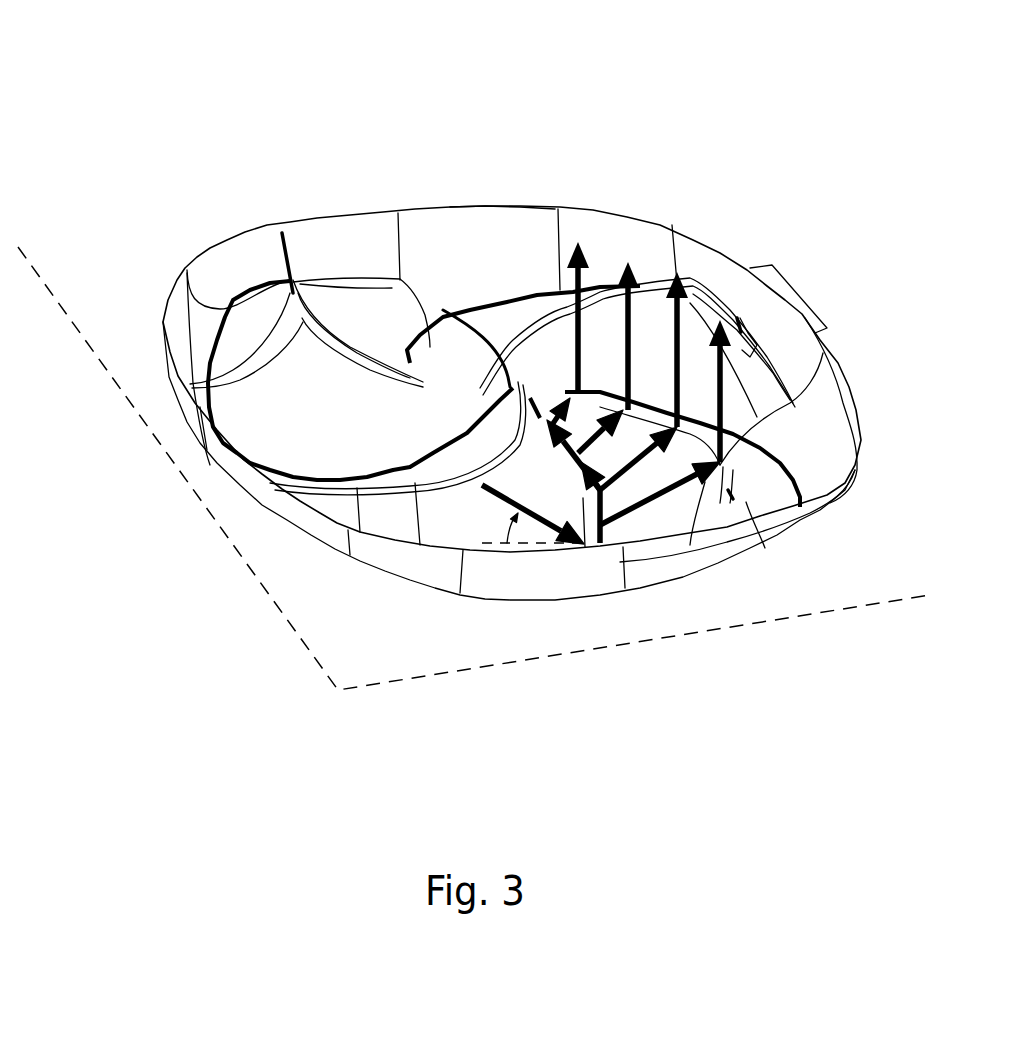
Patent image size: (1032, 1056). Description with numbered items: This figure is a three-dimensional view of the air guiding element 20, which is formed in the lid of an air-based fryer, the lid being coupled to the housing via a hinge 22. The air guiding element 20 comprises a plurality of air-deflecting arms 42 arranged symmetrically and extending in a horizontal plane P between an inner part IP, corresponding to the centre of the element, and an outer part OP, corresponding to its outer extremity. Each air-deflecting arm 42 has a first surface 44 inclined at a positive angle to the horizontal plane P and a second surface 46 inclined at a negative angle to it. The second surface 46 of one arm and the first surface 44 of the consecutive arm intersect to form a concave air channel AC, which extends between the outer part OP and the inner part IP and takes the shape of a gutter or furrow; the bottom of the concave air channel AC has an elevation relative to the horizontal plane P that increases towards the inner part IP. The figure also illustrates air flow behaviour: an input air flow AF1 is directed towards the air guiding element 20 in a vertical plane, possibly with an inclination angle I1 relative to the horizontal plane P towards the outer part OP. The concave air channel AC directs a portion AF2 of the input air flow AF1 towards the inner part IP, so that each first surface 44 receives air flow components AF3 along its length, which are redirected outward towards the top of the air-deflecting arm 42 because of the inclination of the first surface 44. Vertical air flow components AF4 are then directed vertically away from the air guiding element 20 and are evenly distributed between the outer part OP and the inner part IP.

The air guiding element 20 is at (280, 134).
The hinge 22 is at (805, 301).
The air-deflecting arm 42 is at (282, 233).
The first surface 44 is at (698, 503).
The second surface 46 is at (748, 505).
The outer part OP is at (466, 207).
The inner part IP is at (469, 337).
The concave air channel AC is at (537, 297).
The input air flow AF1 is at (513, 508).
The portion of the input air flow AF2 is at (598, 523).
The air flow components AF3 is at (633, 461).
The vertical air flow components AF4 is at (647, 342).
The horizontal plane P is at (474, 468).
The inclination angle I1 is at (533, 527).